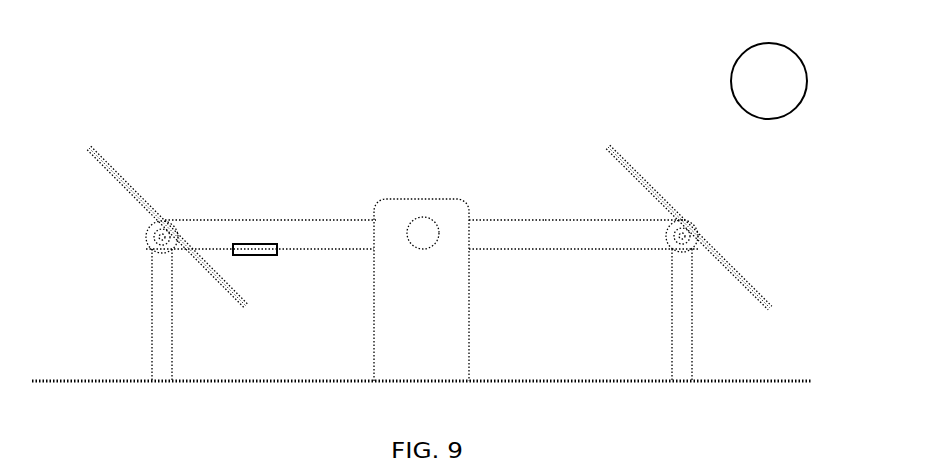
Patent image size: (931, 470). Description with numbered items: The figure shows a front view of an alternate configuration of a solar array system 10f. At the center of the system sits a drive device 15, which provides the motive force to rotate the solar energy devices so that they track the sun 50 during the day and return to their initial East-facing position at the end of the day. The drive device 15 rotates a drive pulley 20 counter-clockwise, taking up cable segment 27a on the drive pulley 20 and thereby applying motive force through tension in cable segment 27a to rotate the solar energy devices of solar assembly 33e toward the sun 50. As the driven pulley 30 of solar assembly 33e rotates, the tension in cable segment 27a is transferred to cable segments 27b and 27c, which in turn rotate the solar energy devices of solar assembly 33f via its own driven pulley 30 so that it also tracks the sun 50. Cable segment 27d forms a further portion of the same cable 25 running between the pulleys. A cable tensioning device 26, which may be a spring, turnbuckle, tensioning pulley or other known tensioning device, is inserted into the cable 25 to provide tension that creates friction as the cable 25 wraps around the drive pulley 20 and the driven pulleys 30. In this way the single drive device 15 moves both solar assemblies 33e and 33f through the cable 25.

The solar array system 10f is at (510, 121).
The drive device 15 is at (408, 199).
The drive pulley 20 is at (429, 247).
The cable 25 is at (505, 219).
The cable tensioning device 26 is at (255, 256).
The cable segment 27a is at (566, 219).
The cable segment 27b is at (557, 248).
The cable segment 27c is at (310, 248).
The cable segment 27d is at (293, 219).
The driven pulley 30 is at (174, 240).
The solar assembly 33e is at (651, 279).
The solar assembly 33f is at (134, 276).
The sun 50 is at (740, 114).